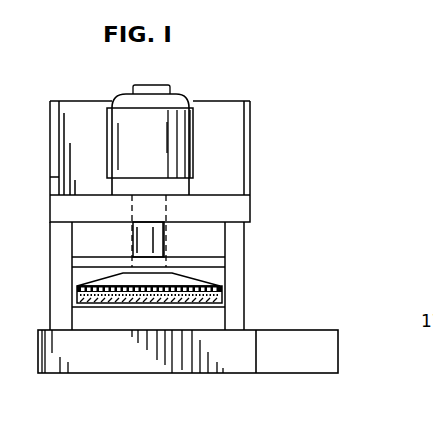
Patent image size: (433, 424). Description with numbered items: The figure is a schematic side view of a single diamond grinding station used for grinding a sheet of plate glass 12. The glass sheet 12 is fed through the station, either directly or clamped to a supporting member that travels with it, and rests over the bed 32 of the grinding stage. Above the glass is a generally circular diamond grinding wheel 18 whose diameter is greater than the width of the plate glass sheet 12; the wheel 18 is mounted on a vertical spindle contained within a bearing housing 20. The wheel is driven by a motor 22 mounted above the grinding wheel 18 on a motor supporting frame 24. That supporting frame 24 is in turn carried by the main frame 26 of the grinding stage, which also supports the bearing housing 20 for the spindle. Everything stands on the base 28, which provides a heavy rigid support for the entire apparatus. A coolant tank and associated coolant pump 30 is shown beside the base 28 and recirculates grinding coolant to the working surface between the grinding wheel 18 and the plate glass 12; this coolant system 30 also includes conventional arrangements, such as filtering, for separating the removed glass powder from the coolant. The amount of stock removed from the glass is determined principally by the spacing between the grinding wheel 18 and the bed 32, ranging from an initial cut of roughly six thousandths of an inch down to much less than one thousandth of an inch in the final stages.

The sheet of plate glass 12 is at (157, 303).
The diamond grinding wheel 18 is at (77, 287).
The bearing housing 20 is at (164, 236).
The motor 22 is at (193, 135).
The motor supporting frame 24 is at (250, 158).
The main frame 26 is at (248, 203).
The base 28 is at (141, 371).
The coolant tank and pump 30 is at (316, 335).
The bed 32 is at (82, 311).